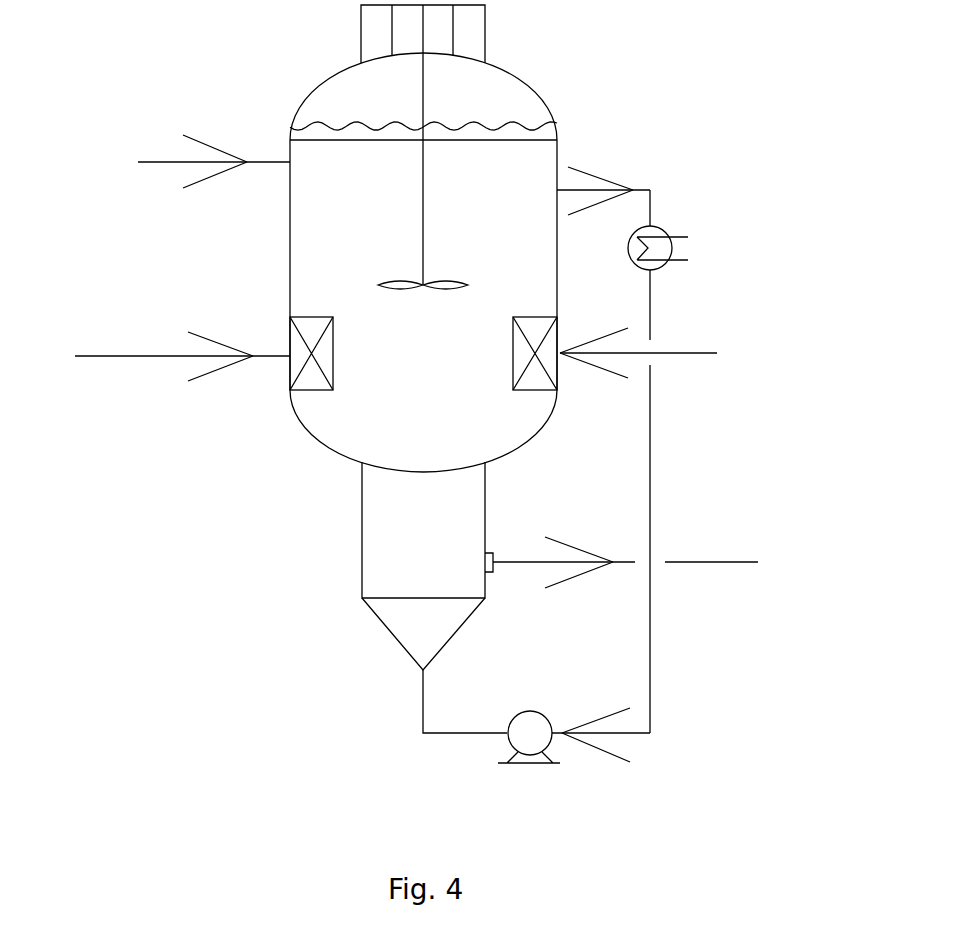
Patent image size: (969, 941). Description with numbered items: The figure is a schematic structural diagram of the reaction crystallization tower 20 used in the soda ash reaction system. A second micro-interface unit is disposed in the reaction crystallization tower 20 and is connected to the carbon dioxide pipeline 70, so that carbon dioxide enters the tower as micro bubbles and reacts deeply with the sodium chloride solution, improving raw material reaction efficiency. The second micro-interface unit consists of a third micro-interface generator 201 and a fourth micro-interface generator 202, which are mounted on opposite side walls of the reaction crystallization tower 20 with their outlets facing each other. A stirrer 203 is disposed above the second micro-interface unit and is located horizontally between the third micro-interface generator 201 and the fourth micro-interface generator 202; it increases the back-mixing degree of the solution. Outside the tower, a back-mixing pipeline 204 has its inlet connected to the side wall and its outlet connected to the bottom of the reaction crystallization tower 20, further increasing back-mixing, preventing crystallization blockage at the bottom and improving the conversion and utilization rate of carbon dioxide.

The reaction crystallization tower 20 is at (388, 384).
The third micro-interface generator 201 is at (260, 401).
The fourth micro-interface generator 202 is at (659, 401).
The stirrer 203 is at (298, 147).
The back-mixing pipeline 204 is at (667, 425).
The carbon dioxide pipeline 70 is at (444, 357).